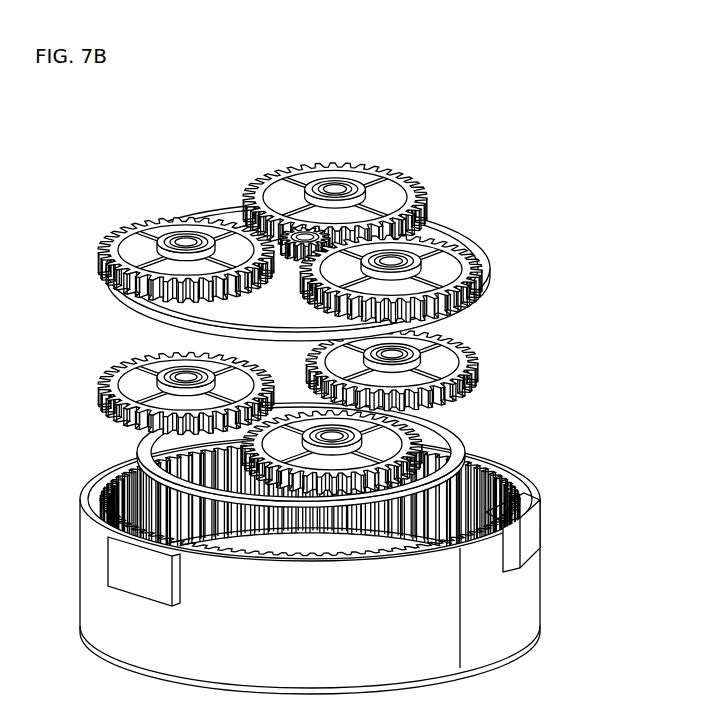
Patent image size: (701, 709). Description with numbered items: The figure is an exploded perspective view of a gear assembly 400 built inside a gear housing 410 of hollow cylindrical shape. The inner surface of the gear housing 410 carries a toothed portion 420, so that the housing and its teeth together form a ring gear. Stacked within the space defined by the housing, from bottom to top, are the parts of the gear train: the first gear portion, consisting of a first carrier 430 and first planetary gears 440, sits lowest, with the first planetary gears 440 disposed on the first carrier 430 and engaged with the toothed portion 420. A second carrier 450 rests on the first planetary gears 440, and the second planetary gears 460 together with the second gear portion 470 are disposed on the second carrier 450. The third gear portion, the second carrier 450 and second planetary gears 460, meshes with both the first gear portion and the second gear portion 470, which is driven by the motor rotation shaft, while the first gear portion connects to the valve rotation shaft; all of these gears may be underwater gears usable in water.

The gear assembly 400 is at (335, 409).
The gear housing 410 is at (354, 565).
The toothed portion 420 is at (338, 484).
The first carrier 430 is at (336, 439).
The first planetary gears 440 is at (413, 354).
The second carrier 450 is at (266, 280).
The second planetary gears 460 is at (356, 187).
The second gear portion 470 is at (278, 194).